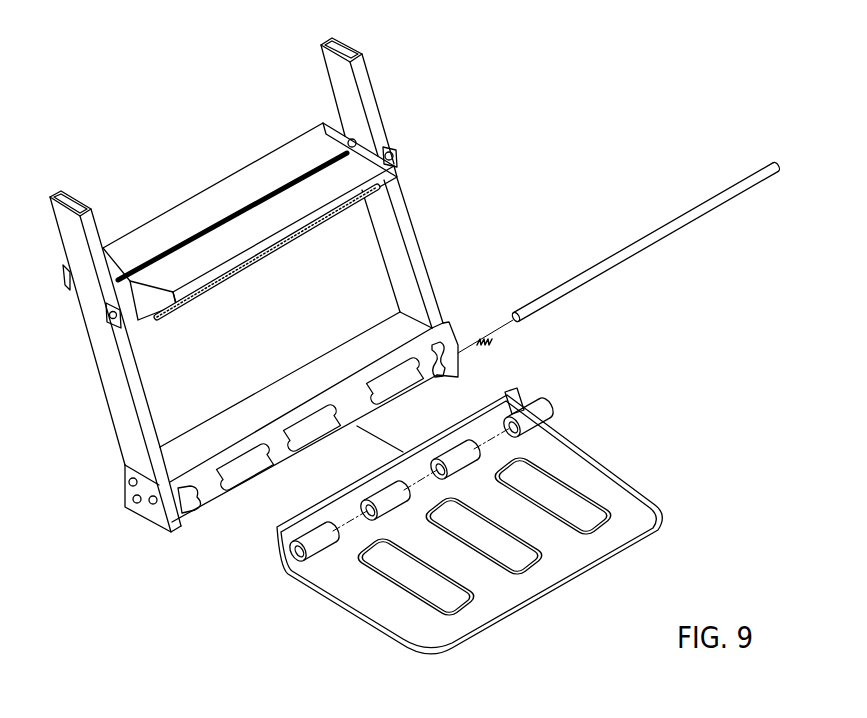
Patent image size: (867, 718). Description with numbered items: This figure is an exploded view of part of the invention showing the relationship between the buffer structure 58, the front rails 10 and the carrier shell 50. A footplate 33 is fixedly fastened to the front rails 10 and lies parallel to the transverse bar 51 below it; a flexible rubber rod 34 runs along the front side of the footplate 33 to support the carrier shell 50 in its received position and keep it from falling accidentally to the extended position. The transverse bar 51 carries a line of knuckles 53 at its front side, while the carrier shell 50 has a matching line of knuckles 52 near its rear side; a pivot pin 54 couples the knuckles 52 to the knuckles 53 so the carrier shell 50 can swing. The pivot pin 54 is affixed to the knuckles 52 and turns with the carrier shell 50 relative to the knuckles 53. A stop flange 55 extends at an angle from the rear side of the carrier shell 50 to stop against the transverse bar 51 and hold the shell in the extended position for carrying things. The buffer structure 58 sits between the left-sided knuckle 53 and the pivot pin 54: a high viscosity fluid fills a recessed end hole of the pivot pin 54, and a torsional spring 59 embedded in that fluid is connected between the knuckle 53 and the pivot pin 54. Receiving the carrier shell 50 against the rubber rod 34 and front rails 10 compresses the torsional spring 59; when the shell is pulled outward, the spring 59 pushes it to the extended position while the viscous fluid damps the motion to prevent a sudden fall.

The front rails 10 is at (413, 228).
The footplate 33 is at (222, 187).
The rubber rod 34 is at (325, 220).
The transverse bar 51 is at (283, 385).
The knuckles 53 is at (193, 512).
The carrier shell 50 is at (613, 477).
The knuckles 52 is at (541, 421).
The stop flange 55 is at (522, 400).
The pivot pin 54 is at (668, 228).
The buffer structure 58 is at (503, 290).
The torsional spring 59 is at (492, 337).